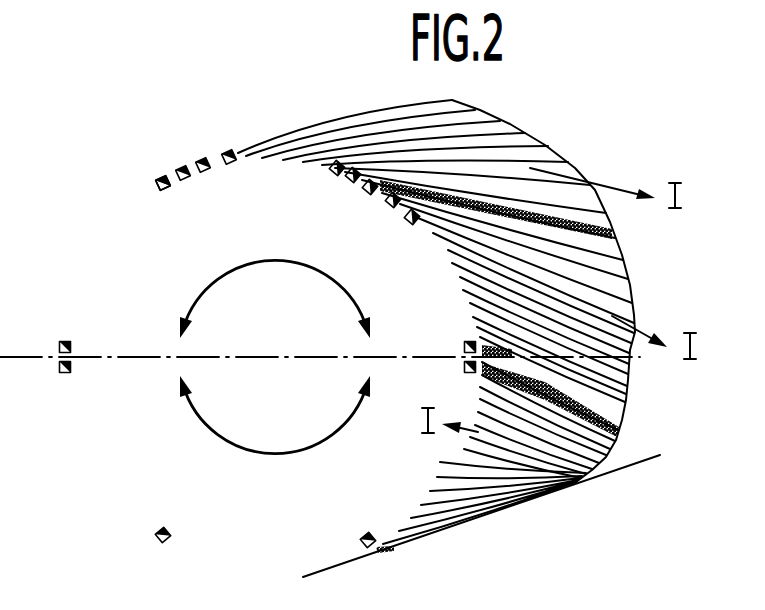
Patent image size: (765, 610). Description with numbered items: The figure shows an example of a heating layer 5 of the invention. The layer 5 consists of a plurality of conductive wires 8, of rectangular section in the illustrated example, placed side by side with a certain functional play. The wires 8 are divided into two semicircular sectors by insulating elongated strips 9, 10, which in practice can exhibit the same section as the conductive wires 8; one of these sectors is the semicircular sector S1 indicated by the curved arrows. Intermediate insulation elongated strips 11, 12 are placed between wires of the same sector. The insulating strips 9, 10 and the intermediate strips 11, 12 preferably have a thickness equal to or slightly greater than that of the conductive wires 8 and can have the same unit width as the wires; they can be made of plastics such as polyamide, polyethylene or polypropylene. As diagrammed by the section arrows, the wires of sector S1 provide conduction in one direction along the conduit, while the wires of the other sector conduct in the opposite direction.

The heating layer 5 is at (172, 142).
The conductive wire 8 is at (232, 163).
The insulating elongated strip 9 is at (66, 338).
The insulating elongated strip 10 is at (66, 378).
The intermediate insulation elongated strip 11 is at (161, 190).
The intermediate insulation elongated strip 12 is at (157, 542).
The semicircular sector S1 is at (275, 334).